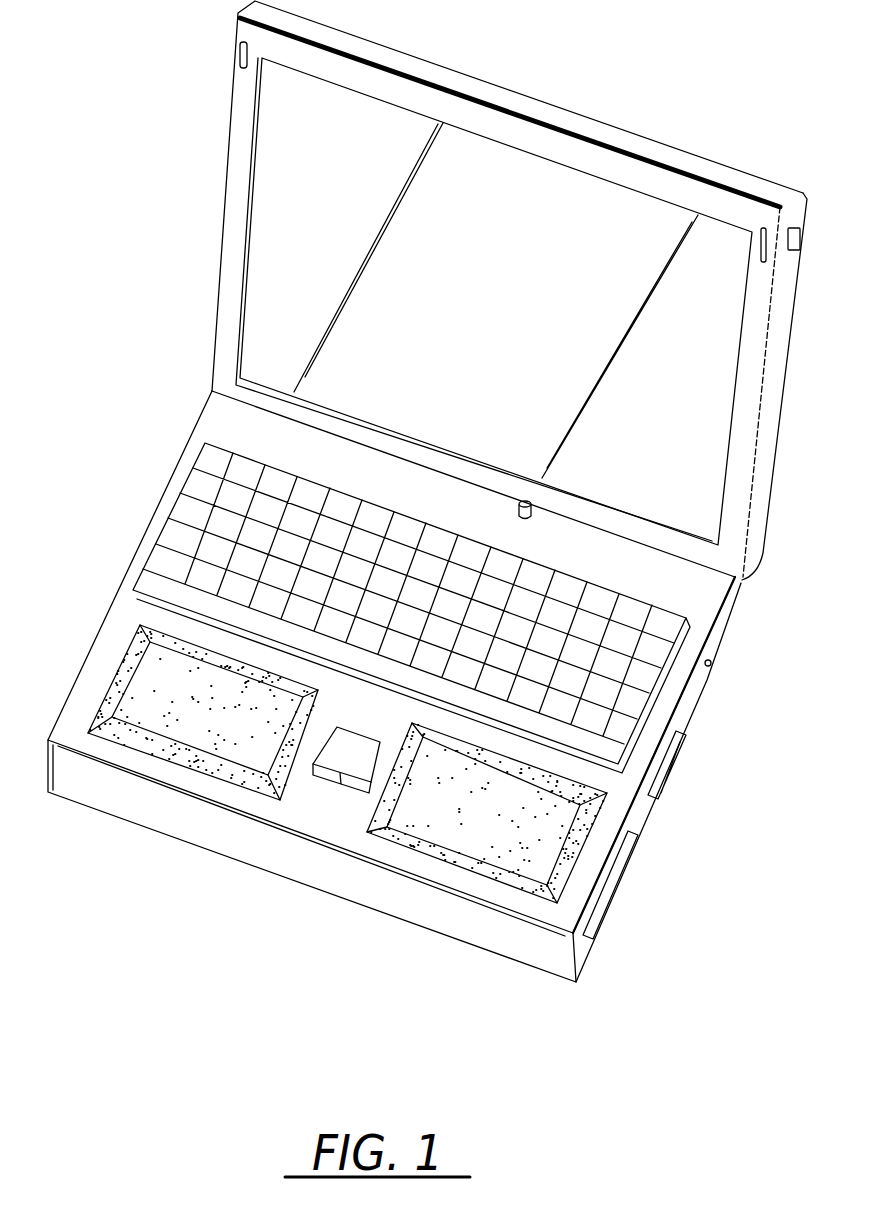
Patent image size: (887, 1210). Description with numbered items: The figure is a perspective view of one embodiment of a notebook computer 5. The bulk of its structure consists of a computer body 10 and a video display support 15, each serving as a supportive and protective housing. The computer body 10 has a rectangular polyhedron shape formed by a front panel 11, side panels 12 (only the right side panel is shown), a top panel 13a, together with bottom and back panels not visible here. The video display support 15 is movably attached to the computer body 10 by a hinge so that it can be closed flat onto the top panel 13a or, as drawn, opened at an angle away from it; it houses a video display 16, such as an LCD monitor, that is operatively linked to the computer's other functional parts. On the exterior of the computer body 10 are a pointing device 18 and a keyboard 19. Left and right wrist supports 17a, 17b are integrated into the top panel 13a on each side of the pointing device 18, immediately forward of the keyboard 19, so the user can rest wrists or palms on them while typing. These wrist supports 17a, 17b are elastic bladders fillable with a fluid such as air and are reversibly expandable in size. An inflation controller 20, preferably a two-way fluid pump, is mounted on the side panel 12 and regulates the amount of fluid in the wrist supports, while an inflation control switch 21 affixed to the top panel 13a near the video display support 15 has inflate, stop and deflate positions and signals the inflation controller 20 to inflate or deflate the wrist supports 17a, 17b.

The notebook computer 5 is at (458, 493).
The computer body 10 is at (147, 527).
The front panel 11 is at (232, 843).
The side panel 12 is at (690, 703).
The top panel 13a is at (108, 640).
The video display support 15 is at (777, 398).
The video display 16 is at (672, 228).
The left wrist support 17a is at (190, 728).
The right wrist support 17b is at (468, 832).
The pointing device 18 is at (323, 750).
The keyboard 19 is at (638, 668).
The inflation controller 20 is at (668, 777).
The inflation control switch 21 is at (532, 508).